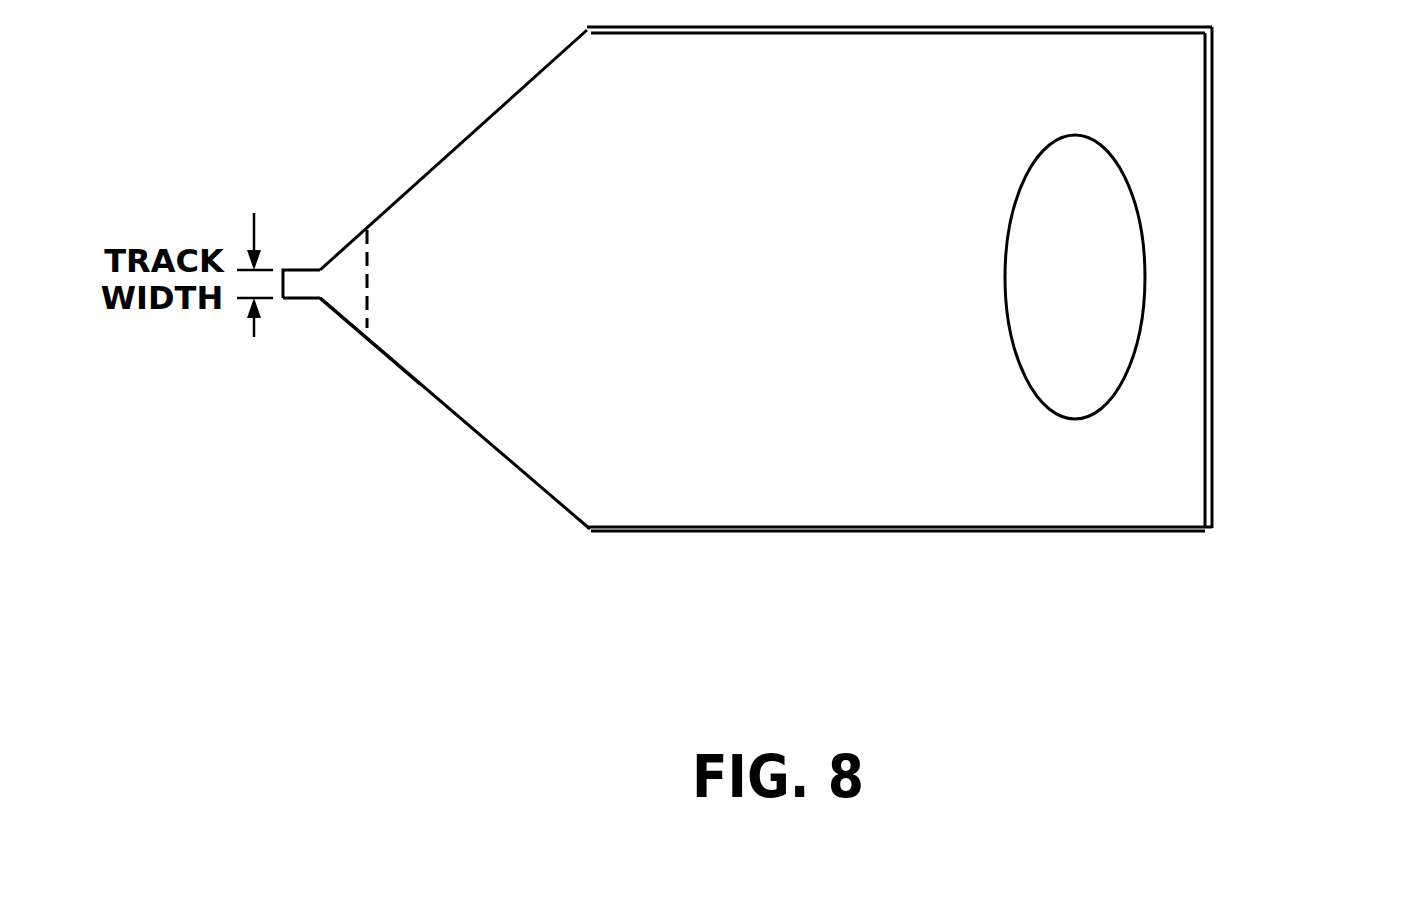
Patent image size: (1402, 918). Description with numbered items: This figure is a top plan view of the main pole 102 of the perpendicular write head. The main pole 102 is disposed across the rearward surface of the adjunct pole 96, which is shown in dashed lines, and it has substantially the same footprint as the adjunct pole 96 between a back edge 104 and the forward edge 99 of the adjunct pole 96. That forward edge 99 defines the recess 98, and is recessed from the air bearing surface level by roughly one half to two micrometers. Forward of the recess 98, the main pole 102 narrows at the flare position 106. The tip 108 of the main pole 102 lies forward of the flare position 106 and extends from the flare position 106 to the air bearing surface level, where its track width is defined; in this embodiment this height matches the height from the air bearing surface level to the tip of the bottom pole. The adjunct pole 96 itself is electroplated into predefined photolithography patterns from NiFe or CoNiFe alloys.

The adjunct pole 96 is at (766, 293).
The recess 98 is at (310, 359).
The forward edge 99 is at (414, 204).
The main pole 102 is at (385, 150).
The back edge 104 is at (1298, 277).
The flare position 106 is at (241, 234).
The tip 108 is at (225, 354).